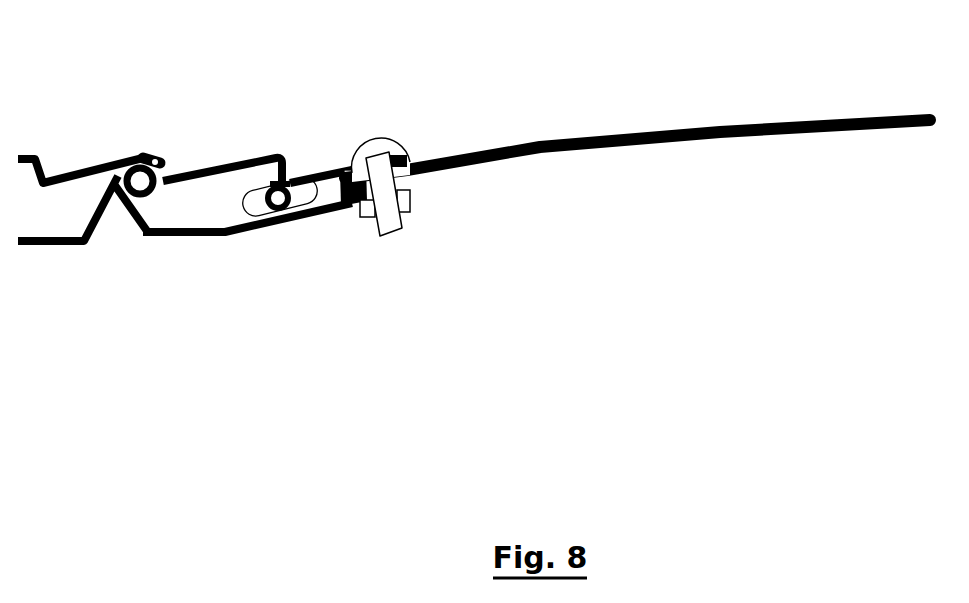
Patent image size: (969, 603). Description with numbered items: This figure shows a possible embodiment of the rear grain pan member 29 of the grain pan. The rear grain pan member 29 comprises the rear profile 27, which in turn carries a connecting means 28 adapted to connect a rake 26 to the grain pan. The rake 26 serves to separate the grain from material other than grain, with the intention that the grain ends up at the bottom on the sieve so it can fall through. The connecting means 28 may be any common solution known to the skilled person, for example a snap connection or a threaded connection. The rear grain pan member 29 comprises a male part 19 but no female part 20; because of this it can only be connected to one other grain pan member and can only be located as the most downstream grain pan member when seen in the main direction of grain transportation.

The male part 19 is at (165, 202).
The female part 20 is at (113, 253).
The rake 26 is at (675, 173).
The rear profile 27 is at (339, 225).
The connecting means 28 is at (398, 250).
The rear grain pan member 29 is at (209, 153).